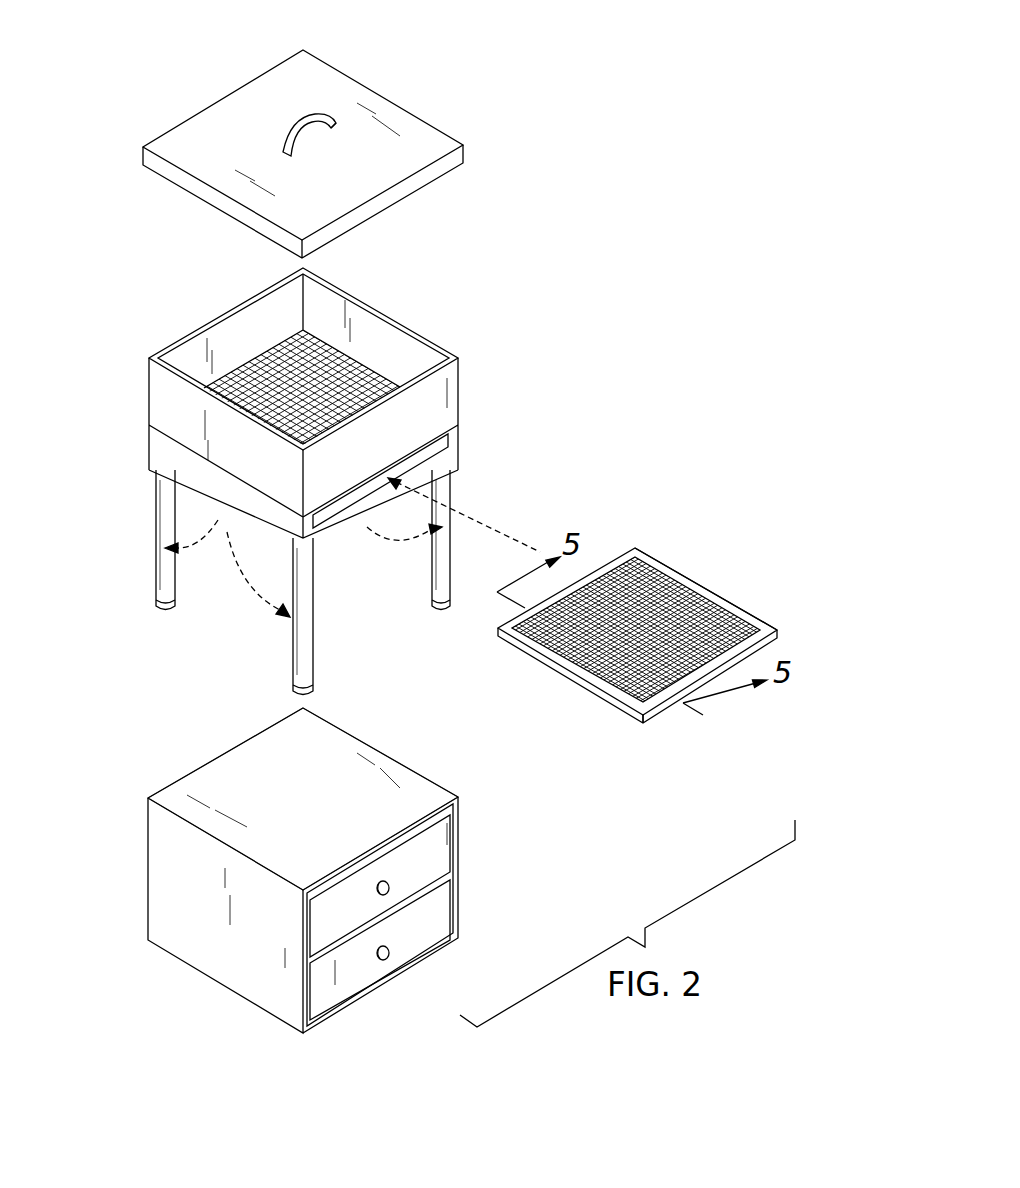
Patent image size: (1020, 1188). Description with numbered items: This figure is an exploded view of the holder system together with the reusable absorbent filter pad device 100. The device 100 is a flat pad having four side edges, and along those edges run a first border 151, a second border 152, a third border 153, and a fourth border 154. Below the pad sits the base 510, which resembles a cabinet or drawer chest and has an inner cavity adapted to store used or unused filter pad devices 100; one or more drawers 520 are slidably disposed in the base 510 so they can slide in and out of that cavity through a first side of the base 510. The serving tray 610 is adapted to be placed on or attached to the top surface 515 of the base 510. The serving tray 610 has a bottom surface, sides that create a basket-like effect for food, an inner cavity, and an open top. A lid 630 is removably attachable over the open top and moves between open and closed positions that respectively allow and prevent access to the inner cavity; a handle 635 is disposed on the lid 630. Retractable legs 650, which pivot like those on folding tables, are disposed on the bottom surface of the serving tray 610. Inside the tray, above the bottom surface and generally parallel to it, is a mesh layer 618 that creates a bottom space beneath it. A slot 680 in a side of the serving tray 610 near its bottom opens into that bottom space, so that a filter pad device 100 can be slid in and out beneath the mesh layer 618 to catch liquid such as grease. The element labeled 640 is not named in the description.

The reusable absorbent filter pad device 100 is at (656, 534).
The first border 151 is at (598, 698).
The second border 152 is at (698, 582).
The third border 153 is at (595, 568).
The fourth border 154 is at (650, 722).
The base 510 is at (158, 865).
The top surface 515 is at (262, 770).
The drawers 520 is at (437, 912).
The serving tray 610 is at (157, 397).
The mesh layer 618 is at (368, 383).
The lid 630 is at (412, 128).
The handle 635 is at (315, 115).
The base band 640 is at (460, 453).
The retractable legs 650 is at (162, 557).
The slot 680 is at (447, 440).